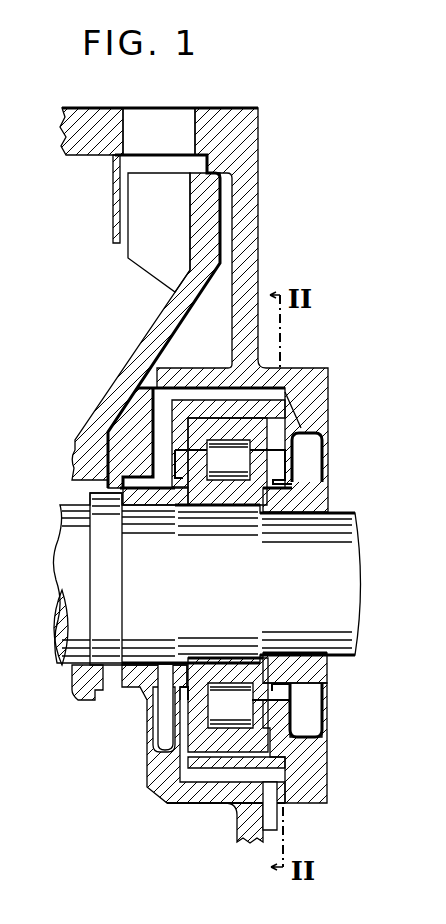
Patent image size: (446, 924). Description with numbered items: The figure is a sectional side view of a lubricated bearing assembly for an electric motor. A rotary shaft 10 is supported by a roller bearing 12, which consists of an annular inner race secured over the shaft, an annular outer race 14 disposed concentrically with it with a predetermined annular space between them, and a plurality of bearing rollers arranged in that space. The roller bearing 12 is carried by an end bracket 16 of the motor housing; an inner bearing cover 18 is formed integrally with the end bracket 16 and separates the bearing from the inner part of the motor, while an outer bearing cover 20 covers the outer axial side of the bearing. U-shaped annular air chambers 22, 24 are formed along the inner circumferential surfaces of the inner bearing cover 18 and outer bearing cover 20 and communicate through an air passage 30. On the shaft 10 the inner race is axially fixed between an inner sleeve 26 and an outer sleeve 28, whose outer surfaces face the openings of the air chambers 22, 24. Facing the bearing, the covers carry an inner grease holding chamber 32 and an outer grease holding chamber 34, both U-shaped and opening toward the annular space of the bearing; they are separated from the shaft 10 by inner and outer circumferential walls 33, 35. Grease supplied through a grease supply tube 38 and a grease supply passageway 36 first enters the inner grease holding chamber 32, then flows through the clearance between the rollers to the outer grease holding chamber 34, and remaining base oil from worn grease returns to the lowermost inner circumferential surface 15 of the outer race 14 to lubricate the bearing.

The rotary shaft 10 is at (66, 570).
The roller bearing 12 is at (288, 492).
The annular outer race 14 is at (262, 740).
The lowermost inner circumferential surface 15 is at (150, 777).
The end bracket 16 is at (185, 375).
The inner bearing cover 18 is at (157, 738).
The outer bearing cover 20 is at (318, 405).
The annular air chamber 22 is at (160, 450).
The annular air chamber 24 is at (308, 718).
The inner sleeve 26 is at (122, 500).
The outer sleeve 28 is at (318, 670).
The air passage 30 is at (263, 397).
The inner grease holding chamber 32 is at (183, 707).
The inner circumferential wall 33 is at (170, 492).
The outer grease holding chamber 34 is at (282, 460).
The outer circumferential wall 35 is at (278, 690).
The grease supply passageway 36 is at (197, 773).
The grease supply tube 38 is at (265, 822).